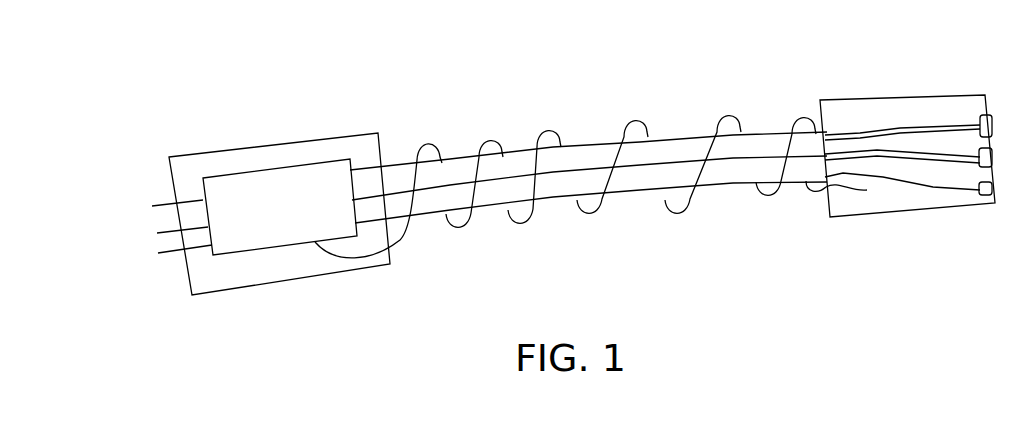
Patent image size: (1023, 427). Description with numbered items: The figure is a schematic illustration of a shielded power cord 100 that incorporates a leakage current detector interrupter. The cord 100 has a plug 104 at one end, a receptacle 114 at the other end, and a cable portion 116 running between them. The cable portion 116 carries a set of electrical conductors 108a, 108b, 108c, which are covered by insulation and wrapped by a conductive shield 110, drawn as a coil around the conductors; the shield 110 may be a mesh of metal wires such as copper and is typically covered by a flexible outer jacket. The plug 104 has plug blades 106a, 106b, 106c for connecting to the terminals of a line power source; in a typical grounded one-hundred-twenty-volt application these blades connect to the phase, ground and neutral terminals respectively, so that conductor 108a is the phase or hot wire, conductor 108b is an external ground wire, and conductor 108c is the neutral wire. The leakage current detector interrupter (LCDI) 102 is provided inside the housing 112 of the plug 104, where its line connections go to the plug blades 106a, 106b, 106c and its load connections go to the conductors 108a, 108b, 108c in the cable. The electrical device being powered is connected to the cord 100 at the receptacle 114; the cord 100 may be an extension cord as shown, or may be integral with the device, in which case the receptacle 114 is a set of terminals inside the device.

The power cord 100 is at (541, 195).
The leakage current detector interrupter (LCDI) 102 is at (215, 177).
The plug 104 is at (253, 268).
The plug blade 106a is at (163, 205).
The plug blade 106b is at (160, 230).
The plug blade 106c is at (170, 260).
The electrical conductor 108a is at (678, 137).
The electrical conductor 108b is at (690, 160).
The electrical conductor 108c is at (720, 187).
The conductive shield 110 is at (563, 142).
The housing 112 is at (279, 223).
The receptacle 114 is at (907, 94).
The cable portion 116 is at (571, 142).